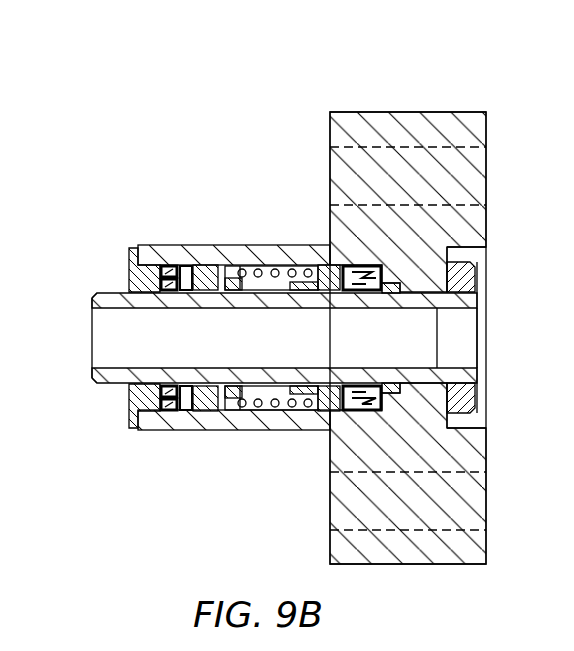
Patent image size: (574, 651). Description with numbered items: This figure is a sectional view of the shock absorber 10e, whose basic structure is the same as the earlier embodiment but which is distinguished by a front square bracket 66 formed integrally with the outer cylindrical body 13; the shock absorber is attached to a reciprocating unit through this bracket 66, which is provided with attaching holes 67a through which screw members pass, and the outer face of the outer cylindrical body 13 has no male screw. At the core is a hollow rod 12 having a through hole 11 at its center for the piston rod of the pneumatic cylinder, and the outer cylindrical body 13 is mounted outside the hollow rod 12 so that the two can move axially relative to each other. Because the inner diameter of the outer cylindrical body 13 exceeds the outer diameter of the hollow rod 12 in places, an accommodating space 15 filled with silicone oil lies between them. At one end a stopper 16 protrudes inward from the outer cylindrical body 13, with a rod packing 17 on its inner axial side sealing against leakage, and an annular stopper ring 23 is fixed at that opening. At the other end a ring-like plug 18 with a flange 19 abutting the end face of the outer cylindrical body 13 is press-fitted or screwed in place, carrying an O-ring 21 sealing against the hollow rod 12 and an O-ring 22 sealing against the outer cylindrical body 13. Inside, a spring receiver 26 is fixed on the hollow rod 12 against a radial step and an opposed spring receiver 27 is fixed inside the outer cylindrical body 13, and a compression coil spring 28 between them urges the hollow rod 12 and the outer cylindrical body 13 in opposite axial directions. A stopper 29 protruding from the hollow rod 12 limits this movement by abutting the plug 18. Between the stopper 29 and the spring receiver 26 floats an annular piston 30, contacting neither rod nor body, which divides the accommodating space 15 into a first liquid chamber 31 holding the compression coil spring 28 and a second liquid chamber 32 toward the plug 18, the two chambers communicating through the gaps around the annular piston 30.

The shock absorber 10e is at (428, 94).
The through hole 11 is at (93, 362).
The hollow rod 12 is at (95, 296).
The outer cylindrical body 13 is at (230, 250).
The accommodating space 15 is at (283, 266).
The stopper 16 is at (384, 293).
The rod packing 17 is at (374, 264).
The plug 18 is at (129, 270).
The flange 19 is at (129, 420).
The O-ring 21 is at (166, 292).
The O-ring 22 is at (167, 266).
The stopper ring 23 is at (465, 276).
The spring receiver 26 is at (235, 428).
The spring receiver 27 is at (325, 430).
The compression coil spring 28 is at (280, 428).
The stopper 29 is at (175, 411).
The annular piston 30 is at (205, 428).
The first liquid chamber 31 is at (268, 266).
The second liquid chamber 32 is at (187, 266).
The front square bracket 66 is at (466, 556).
The attaching holes 67a is at (456, 146).